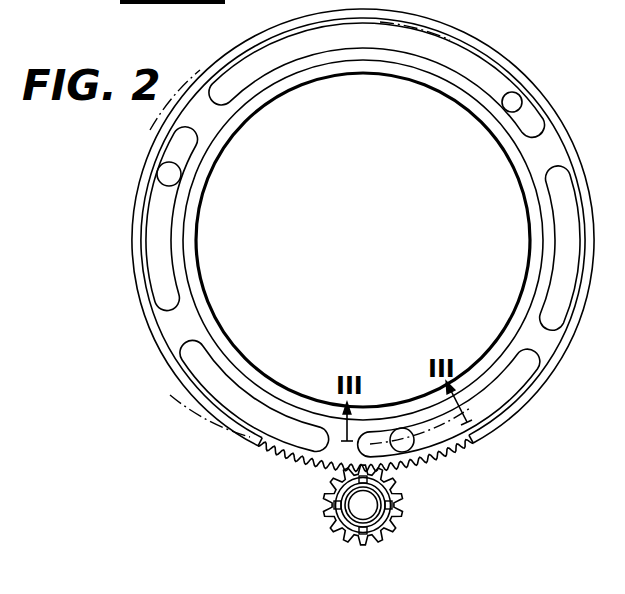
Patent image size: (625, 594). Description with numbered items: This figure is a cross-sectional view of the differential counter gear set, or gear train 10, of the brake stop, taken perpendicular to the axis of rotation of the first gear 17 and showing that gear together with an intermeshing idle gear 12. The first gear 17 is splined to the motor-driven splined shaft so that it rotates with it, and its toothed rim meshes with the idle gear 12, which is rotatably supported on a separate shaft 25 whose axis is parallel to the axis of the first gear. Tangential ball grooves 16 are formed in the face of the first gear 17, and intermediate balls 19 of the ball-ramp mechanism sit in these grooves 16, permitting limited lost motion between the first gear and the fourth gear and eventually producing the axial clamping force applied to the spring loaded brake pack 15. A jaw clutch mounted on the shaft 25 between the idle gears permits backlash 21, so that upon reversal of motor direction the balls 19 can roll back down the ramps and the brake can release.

The gear train 10 is at (282, 511).
The idle gear 12 is at (332, 498).
The spring loaded brake pack 15 is at (363, 240).
The tangential ball grooves 16 is at (246, 76).
The first gear 17 is at (200, 414).
The balls 19 is at (168, 180).
The backlash 21 is at (334, 514).
The shaft 25 is at (370, 506).